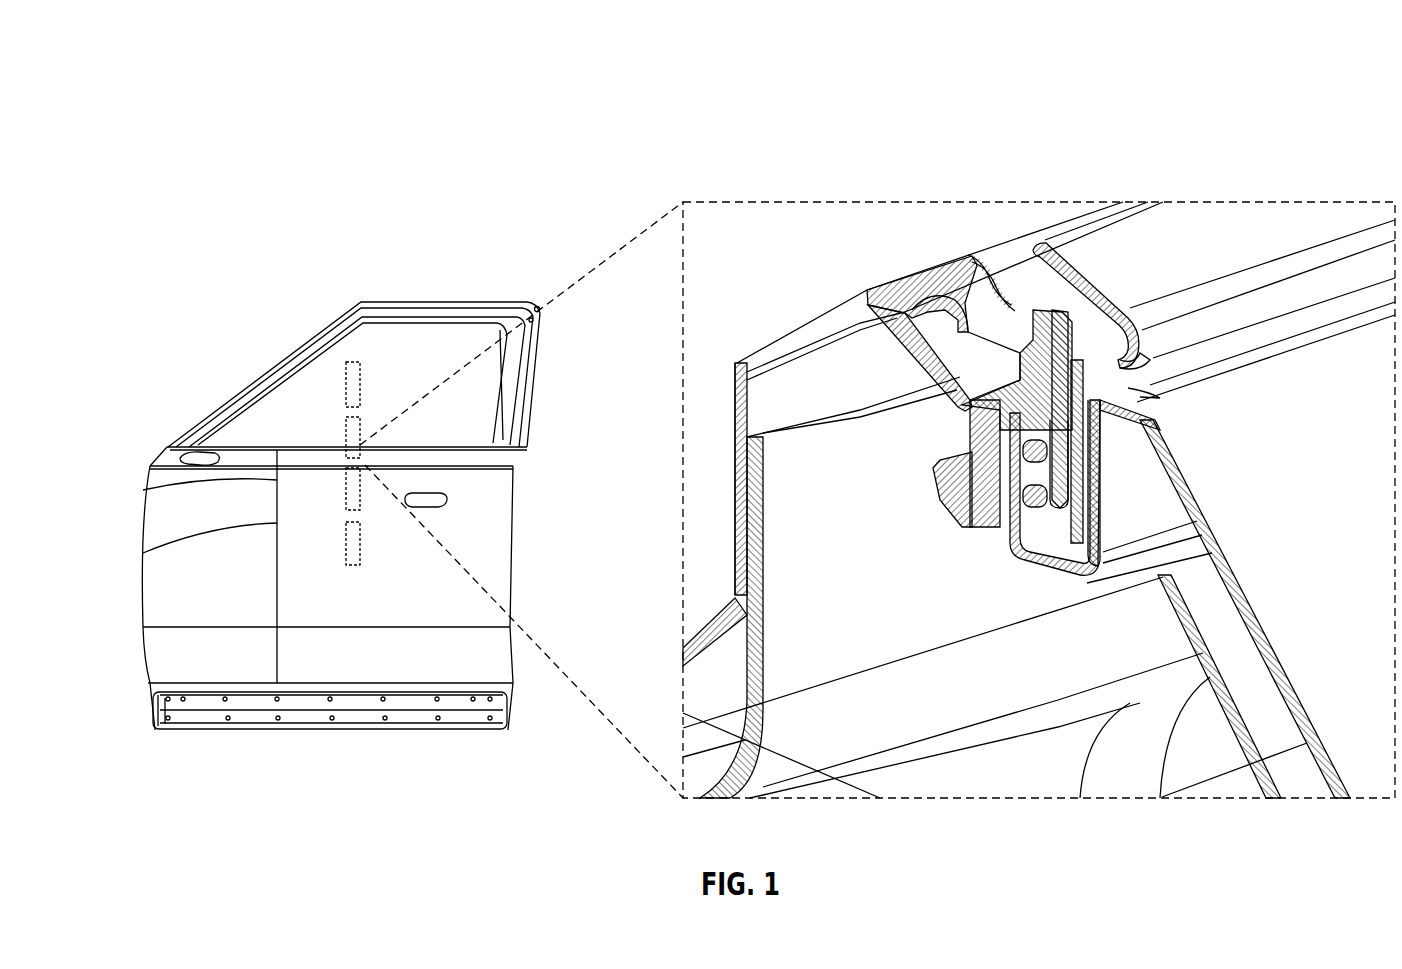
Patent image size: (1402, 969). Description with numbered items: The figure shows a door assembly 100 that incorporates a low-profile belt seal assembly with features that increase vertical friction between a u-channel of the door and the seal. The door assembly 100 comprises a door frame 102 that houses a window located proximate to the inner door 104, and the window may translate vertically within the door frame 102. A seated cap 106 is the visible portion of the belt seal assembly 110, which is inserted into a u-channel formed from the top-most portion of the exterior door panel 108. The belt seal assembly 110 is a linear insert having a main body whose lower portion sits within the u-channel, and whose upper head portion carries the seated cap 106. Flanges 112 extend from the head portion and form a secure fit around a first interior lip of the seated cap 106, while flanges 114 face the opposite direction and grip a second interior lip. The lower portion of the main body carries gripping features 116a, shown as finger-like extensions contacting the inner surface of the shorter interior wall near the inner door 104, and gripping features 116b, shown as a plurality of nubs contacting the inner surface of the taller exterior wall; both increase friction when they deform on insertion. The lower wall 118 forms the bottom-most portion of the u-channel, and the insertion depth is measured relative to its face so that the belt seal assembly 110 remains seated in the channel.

The door assembly 100 is at (318, 84).
The door frame 102 is at (207, 423).
The inner door 104 is at (800, 470).
The seated cap 106 is at (273, 447).
The exterior door panel 108 is at (302, 493).
The belt seal assembly 110 is at (1078, 290).
The flanges 112 is at (1000, 270).
The flanges 114 is at (1140, 353).
The gripping features 116a is at (1003, 530).
The gripping features 116b is at (1100, 550).
The lower wall 118 is at (1040, 567).